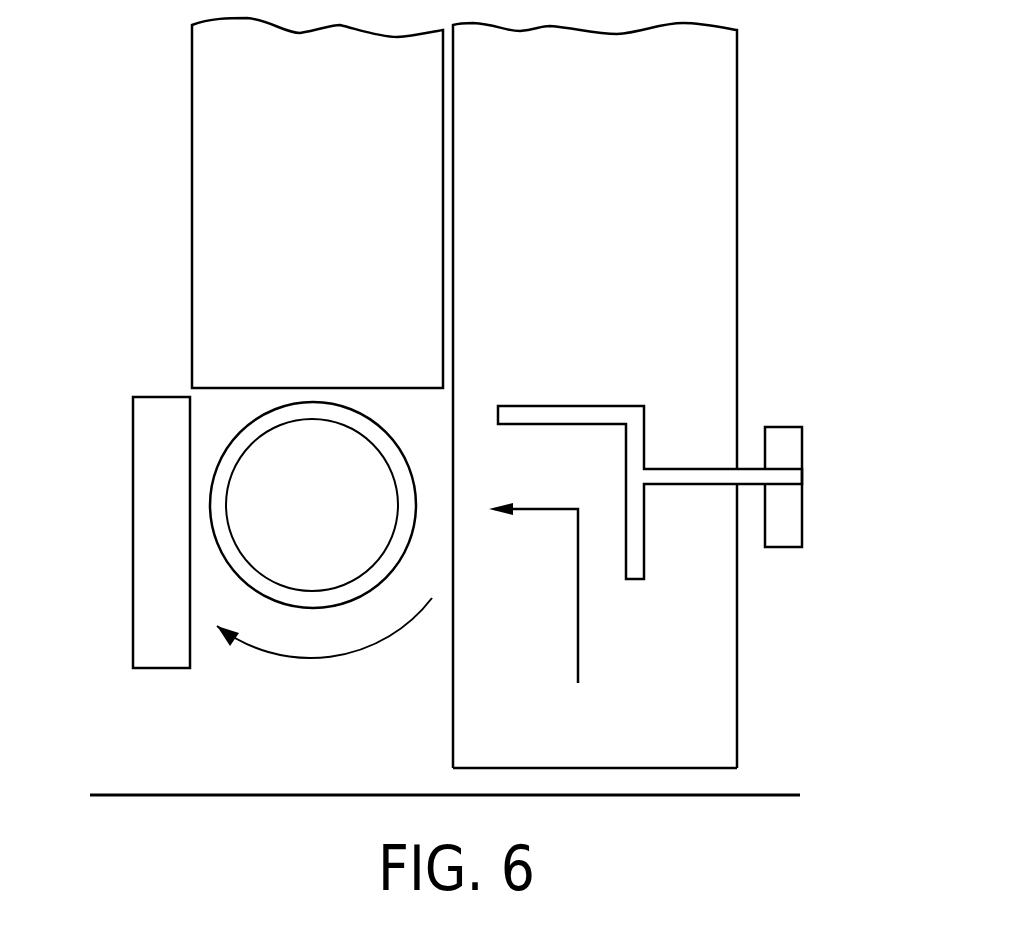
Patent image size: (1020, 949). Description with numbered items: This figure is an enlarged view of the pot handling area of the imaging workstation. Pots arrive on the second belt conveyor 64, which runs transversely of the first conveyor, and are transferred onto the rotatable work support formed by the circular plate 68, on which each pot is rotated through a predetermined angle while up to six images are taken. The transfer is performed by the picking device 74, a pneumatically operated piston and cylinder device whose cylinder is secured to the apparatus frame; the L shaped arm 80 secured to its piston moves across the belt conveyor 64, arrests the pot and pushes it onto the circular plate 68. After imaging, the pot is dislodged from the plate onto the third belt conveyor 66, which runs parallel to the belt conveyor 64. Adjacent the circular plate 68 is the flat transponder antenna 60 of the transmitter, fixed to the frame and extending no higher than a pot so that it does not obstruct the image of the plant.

The flat transponder antenna 60 is at (133, 502).
The second belt conveyor 64 is at (623, 655).
The third belt conveyor 66 is at (218, 150).
The circular plate 68 is at (301, 565).
The picking device 74 is at (802, 437).
The L shaped arm 80 is at (590, 406).